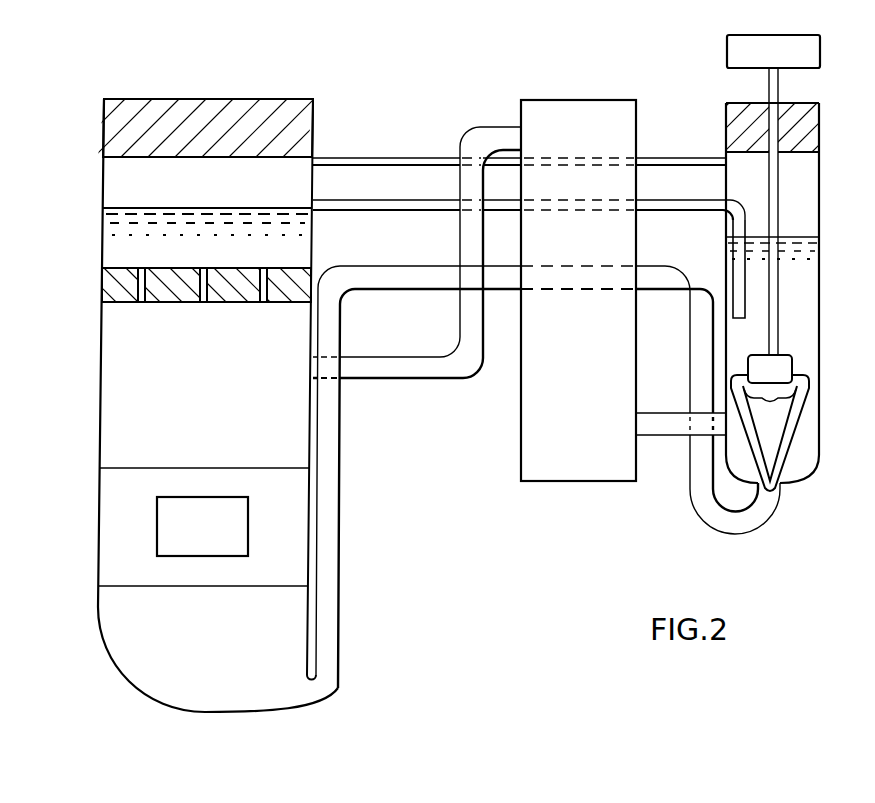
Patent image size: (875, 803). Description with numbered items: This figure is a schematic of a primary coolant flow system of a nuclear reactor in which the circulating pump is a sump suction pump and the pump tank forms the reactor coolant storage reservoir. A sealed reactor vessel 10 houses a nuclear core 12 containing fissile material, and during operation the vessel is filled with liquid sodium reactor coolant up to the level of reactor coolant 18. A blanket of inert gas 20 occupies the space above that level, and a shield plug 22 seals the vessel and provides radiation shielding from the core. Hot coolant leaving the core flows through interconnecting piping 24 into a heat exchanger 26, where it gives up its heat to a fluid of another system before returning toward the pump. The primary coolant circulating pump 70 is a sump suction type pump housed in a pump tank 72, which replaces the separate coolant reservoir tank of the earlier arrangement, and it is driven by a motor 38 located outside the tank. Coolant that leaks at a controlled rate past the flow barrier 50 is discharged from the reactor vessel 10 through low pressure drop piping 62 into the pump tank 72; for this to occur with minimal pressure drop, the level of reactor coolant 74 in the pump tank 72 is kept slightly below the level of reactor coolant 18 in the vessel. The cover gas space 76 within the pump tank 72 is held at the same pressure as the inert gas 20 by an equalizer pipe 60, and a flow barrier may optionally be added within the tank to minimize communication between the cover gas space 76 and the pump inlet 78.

The reactor vessel 10 is at (310, 439).
The nuclear core 12 is at (241, 522).
The level of reactor coolant 18 is at (116, 209).
The blanket of inert gas 20 is at (112, 170).
The shield plug 22 is at (118, 99).
The interconnecting piping 24 is at (430, 356).
The heat exchanger 26 is at (521, 465).
The motor 38 is at (758, 35).
The flow barrier 50 is at (113, 270).
The equalizer pipe 60 is at (348, 158).
The low pressure drop piping 62 is at (344, 211).
The primary coolant circulating pump 70 is at (790, 368).
The pump tank 72 is at (790, 487).
The level of reactor coolant 74 is at (803, 237).
The cover gas space 76 is at (738, 182).
The pump inlet 78 is at (745, 316).